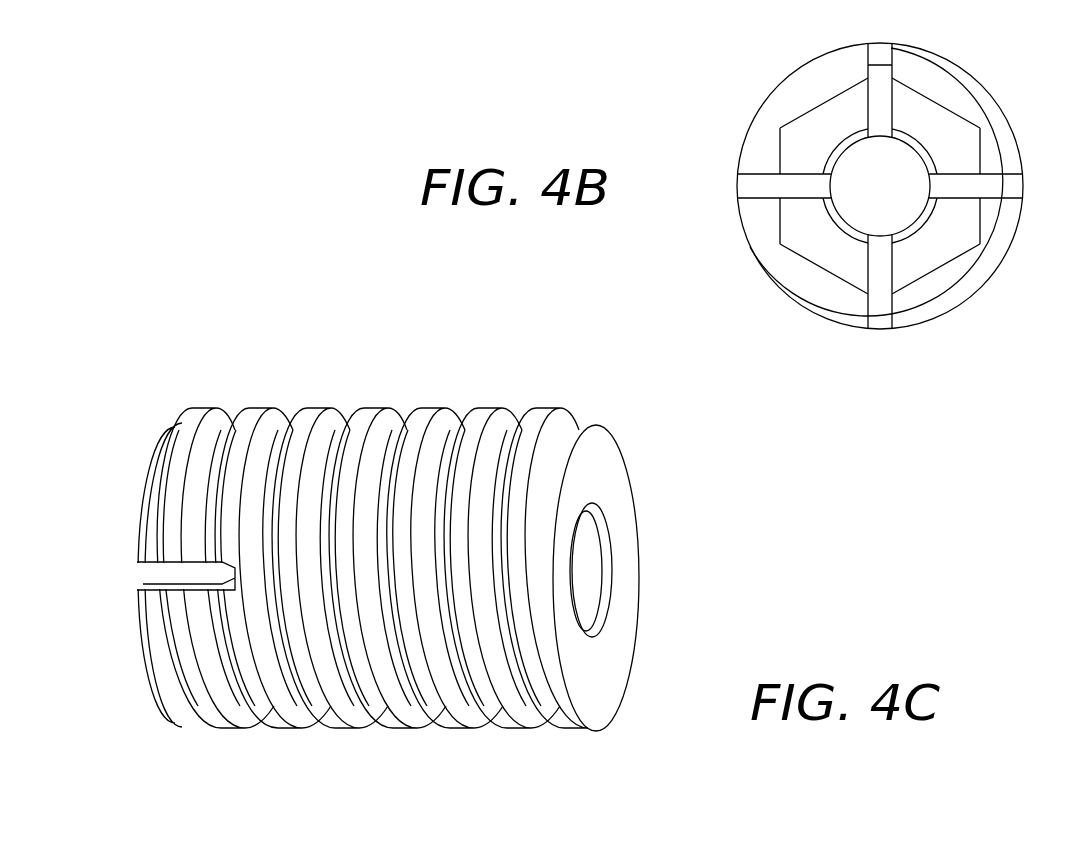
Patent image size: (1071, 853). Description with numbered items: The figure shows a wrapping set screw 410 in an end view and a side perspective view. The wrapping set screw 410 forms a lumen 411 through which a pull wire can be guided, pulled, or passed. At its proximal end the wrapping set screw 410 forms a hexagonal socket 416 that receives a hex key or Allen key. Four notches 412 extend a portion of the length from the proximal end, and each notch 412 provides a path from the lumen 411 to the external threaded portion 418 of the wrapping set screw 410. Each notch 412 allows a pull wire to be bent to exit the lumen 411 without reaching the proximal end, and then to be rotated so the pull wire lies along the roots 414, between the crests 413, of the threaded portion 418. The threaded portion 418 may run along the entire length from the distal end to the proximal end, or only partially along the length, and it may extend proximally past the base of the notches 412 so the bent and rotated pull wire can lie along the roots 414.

In FIG. 4B, the wrapping set screw 410 is at (748, 47).
In FIG. 4C, the wrapping set screw 410 is at (703, 446).
In FIG. 4B, the lumen 411 is at (860, 173).
In FIG. 4C, the lumen 411 is at (594, 567).
In FIG. 4B, the notch 412 is at (882, 52).
In FIG. 4C, the notch 412 is at (139, 562).
In FIG. 4C, the crest 413 is at (372, 405).
In FIG. 4C, the root 414 is at (347, 430).
In FIG. 4B, the hexagonal socket 416 is at (932, 97).
In FIG. 4C, the threaded portion 418 is at (362, 352).